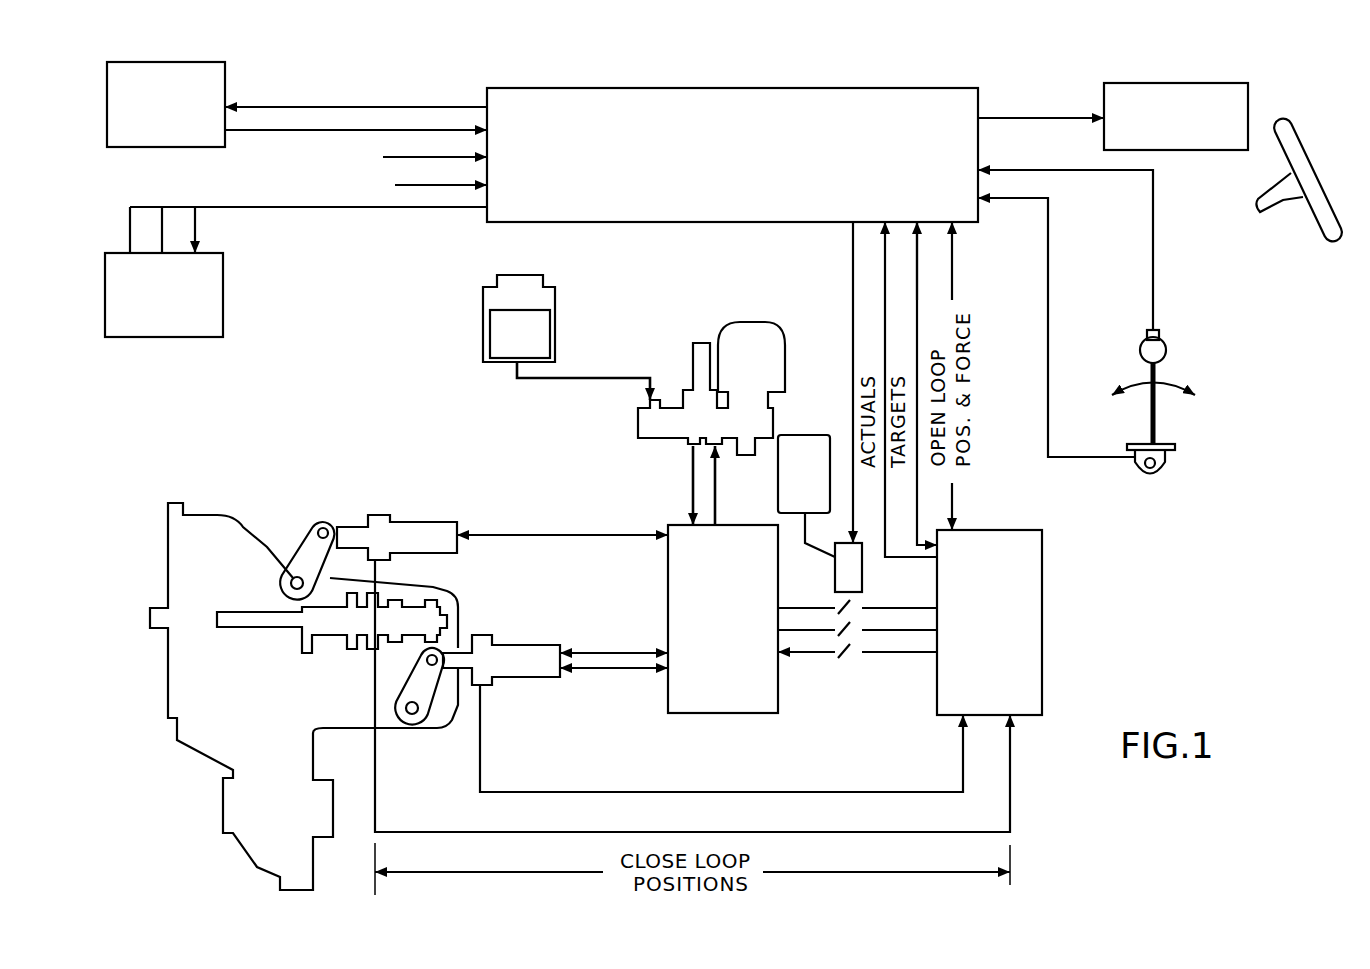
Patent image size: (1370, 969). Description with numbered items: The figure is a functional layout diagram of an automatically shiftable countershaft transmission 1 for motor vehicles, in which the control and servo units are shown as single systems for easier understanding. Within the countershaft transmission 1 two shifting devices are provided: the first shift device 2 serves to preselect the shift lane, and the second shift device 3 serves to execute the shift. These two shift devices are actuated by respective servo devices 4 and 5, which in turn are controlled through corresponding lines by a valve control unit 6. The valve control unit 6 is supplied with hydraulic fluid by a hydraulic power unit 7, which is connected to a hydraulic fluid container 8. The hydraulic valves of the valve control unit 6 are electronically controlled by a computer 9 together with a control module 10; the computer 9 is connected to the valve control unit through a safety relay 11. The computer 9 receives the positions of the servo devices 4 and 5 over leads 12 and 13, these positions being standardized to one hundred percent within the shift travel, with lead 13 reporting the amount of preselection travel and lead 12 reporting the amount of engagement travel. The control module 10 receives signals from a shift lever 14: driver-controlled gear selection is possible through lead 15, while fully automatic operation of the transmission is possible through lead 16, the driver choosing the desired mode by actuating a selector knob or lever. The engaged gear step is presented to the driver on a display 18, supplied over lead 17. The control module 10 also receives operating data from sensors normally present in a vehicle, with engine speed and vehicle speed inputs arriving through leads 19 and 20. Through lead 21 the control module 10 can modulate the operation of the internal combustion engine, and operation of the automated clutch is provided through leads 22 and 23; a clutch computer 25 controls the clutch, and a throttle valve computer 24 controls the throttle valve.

The countershaft transmission 1 is at (168, 543).
The first shift device 2 is at (323, 527).
The second shift device 3 is at (428, 700).
The servo device 4 is at (400, 535).
The servo device 5 is at (513, 680).
The valve control unit 6 is at (715, 713).
The hydraulic power unit 7 is at (638, 425).
The hydraulic fluid container 8 is at (483, 344).
The computer 9 is at (1042, 583).
The control module 10 is at (748, 88).
The safety relay 11 is at (810, 433).
The lead 12 is at (843, 792).
The lead 13 is at (870, 832).
The shift lever 14 is at (1156, 420).
The lead 15 is at (1048, 430).
The lead 16 is at (1155, 292).
The lead 17 is at (1080, 118).
The display 18 is at (1178, 83).
The lead 19 is at (447, 157).
The lead 20 is at (418, 185).
The lead 21 is at (330, 207).
The lead 22 is at (424, 107).
The lead 23 is at (300, 130).
The throttle valve computer 24 is at (147, 330).
The clutch computer 25 is at (190, 62).